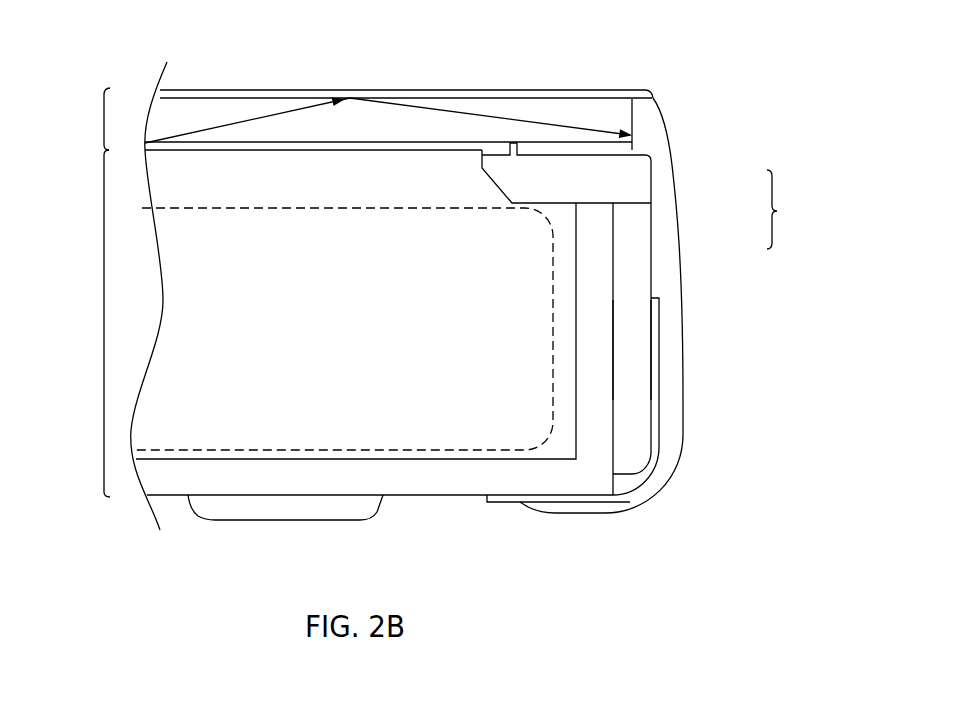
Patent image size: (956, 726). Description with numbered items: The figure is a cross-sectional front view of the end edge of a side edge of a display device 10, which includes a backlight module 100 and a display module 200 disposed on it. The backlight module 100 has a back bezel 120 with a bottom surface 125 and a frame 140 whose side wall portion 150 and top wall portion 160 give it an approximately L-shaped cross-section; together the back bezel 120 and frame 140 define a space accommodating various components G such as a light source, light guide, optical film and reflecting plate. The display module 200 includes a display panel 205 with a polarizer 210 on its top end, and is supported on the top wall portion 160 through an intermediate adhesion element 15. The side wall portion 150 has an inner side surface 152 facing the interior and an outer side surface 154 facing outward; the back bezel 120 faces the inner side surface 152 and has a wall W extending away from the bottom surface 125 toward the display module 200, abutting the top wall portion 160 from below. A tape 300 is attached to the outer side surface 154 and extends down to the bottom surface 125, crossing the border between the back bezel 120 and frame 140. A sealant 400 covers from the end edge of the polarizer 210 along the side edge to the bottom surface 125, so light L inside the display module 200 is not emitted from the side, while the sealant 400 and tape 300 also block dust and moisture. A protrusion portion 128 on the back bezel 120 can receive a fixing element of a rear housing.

The display device 10 is at (62, 51).
The display module 200 is at (83, 119).
The backlight module 100 is at (83, 323).
The display panel 205 is at (582, 115).
The polarizer 210 is at (639, 92).
The intermediate adhesion element 15 is at (625, 149).
The top wall portion 160 is at (628, 173).
The side wall portion 150 is at (632, 238).
The frame 140 is at (793, 209).
The inner side surface 152 is at (612, 350).
The outer side surface 154 is at (650, 338).
The tape 300 is at (652, 403).
The sealant 400 is at (673, 370).
The back bezel 120 is at (593, 417).
The bottom surface 125 is at (417, 498).
The protrusion portion 128 is at (295, 515).
The light L is at (484, 114).
The components G is at (323, 347).
The wall W is at (583, 272).